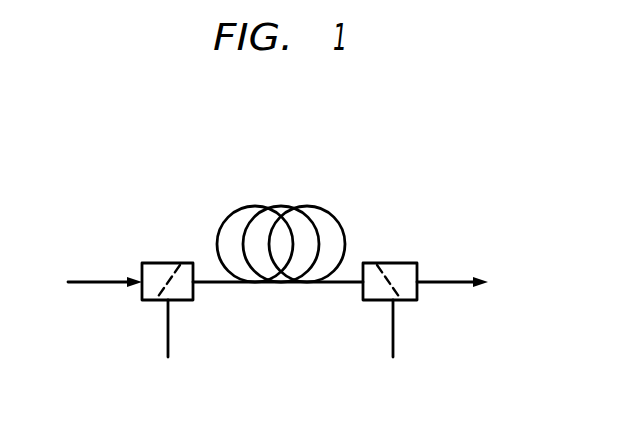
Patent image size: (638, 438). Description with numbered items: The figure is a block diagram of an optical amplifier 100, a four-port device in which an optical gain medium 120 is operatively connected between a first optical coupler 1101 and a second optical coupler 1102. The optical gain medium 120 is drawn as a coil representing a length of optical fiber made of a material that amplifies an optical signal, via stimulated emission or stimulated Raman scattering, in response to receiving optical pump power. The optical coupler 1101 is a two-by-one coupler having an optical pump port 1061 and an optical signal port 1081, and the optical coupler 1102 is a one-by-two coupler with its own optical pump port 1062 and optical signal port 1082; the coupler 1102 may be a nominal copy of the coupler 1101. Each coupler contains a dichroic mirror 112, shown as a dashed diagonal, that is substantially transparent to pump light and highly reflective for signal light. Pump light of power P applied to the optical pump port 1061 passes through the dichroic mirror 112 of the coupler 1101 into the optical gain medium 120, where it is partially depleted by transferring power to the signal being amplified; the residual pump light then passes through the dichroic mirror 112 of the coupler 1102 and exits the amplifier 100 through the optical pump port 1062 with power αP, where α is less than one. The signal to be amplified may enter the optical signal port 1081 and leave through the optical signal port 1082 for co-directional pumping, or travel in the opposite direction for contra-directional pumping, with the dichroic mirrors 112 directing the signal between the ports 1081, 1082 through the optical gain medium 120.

The optical amplifier 100 is at (298, 96).
The optical pump port 1061 is at (88, 285).
The optical pump port 1062 is at (443, 285).
The optical coupler 1101 is at (177, 262).
The optical coupler 1102 is at (375, 262).
The dichroic mirror 112 is at (167, 281).
The optical signal port 1081 is at (168, 330).
The optical signal port 1082 is at (393, 328).
The optical gain medium 120 is at (283, 206).